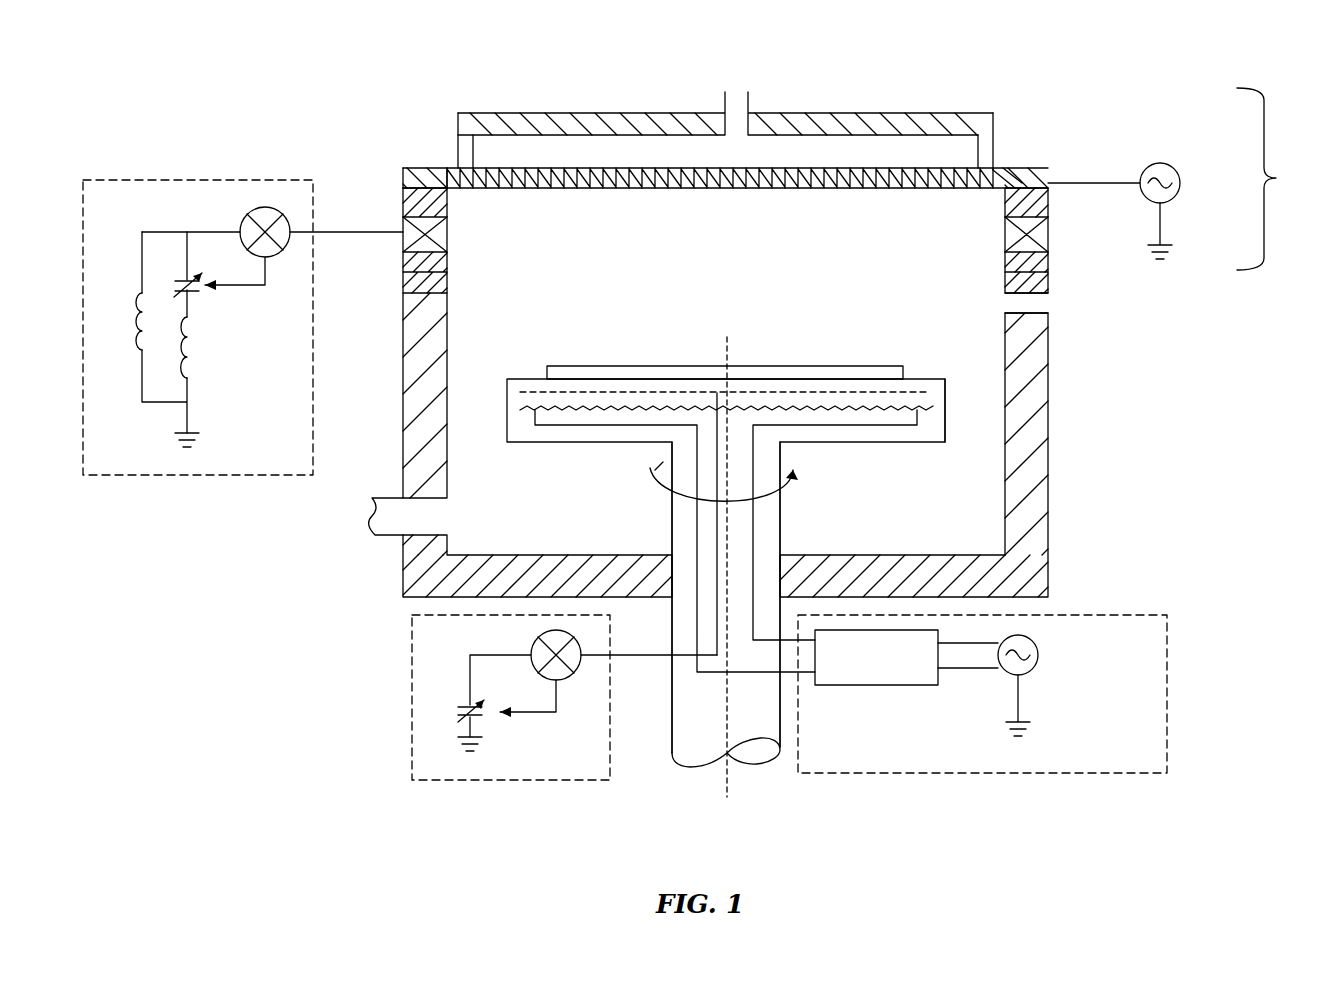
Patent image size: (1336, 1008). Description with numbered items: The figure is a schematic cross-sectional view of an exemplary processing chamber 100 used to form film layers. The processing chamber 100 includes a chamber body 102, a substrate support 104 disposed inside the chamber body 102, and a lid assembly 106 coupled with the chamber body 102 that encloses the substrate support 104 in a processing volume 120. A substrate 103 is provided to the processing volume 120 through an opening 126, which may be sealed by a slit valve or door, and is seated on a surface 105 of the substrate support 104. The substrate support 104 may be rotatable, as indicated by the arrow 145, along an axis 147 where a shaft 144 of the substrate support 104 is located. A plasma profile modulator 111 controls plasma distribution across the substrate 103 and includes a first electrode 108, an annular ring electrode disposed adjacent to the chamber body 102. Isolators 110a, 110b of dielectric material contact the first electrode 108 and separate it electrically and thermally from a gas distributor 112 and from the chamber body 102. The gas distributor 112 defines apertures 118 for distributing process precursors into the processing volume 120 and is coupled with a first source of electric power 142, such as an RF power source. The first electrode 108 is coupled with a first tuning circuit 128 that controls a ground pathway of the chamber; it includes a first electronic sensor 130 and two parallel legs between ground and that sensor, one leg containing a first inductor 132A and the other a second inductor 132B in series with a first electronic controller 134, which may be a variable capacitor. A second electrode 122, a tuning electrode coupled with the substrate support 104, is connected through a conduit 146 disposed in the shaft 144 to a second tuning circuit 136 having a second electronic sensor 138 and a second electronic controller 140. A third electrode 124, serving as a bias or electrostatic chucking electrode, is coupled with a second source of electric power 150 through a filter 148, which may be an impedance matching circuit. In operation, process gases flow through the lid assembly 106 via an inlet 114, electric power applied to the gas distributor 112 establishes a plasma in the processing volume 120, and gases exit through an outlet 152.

The processing chamber 100 is at (968, 62).
The chamber body 102 is at (1050, 402).
The substrate 103 is at (645, 367).
The substrate support 104 is at (530, 380).
The surface 105 is at (925, 379).
The lid assembly 106 is at (1184, 179).
The first electrode 108 is at (447, 232).
The isolator 110a is at (447, 200).
The isolator 110b is at (447, 262).
The plasma profile modulator 111 is at (1145, 288).
The gas distributor 112 is at (1025, 168).
The inlet 114 is at (735, 78).
The apertures 118 is at (752, 190).
The processing volume 120 is at (720, 320).
The second electrode 122 is at (848, 392).
The third electrode 124 is at (866, 412).
The opening 126 is at (1030, 298).
The first tuning circuit 128 is at (243, 330).
The first electronic sensor 130 is at (262, 207).
The first inductor 132A is at (140, 293).
The second inductor 132B is at (190, 372).
The first electronic controller 134 is at (198, 304).
The second tuning circuit 136 is at (477, 719).
The second electronic sensor 138 is at (580, 672).
The second electronic controller 140 is at (440, 710).
The first source of electric power 142 is at (1175, 167).
The shaft 144 is at (782, 515).
The arrow 145 is at (650, 470).
The conduit 146 is at (682, 660).
The axis 147 is at (737, 777).
The filter 148 is at (897, 687).
The second source of electric power 150 is at (982, 694).
The outlet 152 is at (378, 498).